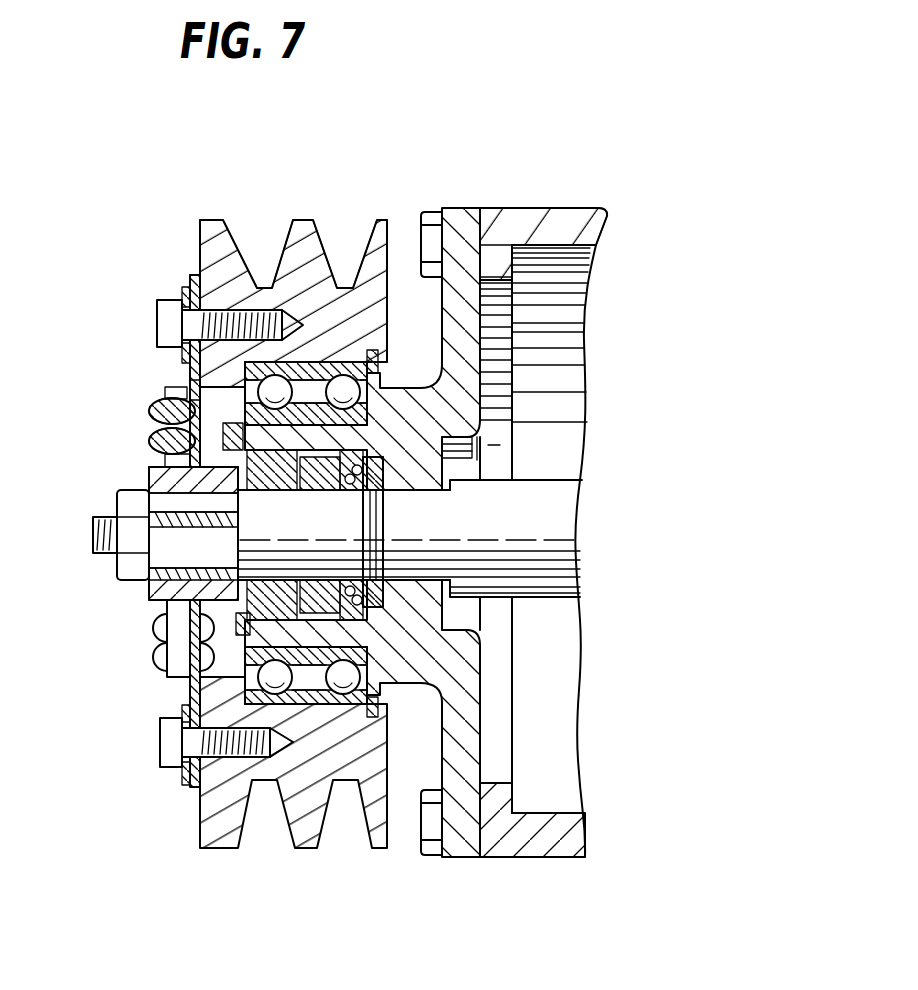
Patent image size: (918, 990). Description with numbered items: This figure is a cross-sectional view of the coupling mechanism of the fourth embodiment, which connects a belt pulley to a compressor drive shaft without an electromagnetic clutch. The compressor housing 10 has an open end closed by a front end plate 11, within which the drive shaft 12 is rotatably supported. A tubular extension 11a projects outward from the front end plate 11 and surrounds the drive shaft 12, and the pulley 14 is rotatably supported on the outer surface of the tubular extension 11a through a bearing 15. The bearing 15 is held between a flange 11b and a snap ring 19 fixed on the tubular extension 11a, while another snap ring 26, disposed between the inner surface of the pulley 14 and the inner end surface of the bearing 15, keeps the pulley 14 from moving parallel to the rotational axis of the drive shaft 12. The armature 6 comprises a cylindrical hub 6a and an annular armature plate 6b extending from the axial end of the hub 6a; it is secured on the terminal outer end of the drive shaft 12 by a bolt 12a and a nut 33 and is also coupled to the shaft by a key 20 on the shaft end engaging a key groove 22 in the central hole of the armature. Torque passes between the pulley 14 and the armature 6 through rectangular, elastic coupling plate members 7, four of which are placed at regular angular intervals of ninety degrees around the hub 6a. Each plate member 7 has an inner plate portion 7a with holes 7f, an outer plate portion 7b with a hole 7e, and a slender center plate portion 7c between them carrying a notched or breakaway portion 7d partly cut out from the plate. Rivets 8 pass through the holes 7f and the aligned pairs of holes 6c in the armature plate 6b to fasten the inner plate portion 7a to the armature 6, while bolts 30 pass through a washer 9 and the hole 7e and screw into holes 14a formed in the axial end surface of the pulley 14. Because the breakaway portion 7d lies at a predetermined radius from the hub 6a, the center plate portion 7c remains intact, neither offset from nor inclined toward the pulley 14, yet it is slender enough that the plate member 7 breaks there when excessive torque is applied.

The armature 6 is at (144, 602).
The hub 6a is at (160, 490).
The armature plate 6b is at (180, 635).
The holes 6c is at (155, 410).
The coupling plate member 7 is at (184, 264).
The inner plate portion 7a is at (150, 450).
The outer plate portion 7b is at (190, 274).
The center plate portion 7c is at (185, 380).
The notched or breakaway portion 7d is at (190, 690).
The hole 7e is at (188, 296).
The holes 7f is at (165, 430).
The rivets 8 is at (160, 668).
The washer 9 is at (183, 293).
The compressor housing 10 is at (544, 217).
The front end plate 11 is at (483, 206).
The tubular extension 11a is at (340, 442).
The flange 11b is at (400, 412).
The drive shaft 12 is at (550, 527).
The bolt 12a is at (100, 536).
The pulley 14 is at (384, 212).
The holes 14a is at (252, 313).
The bearing 15 is at (366, 390).
The snap ring 19 is at (190, 390).
The key 20 is at (212, 512).
The key groove 22 is at (528, 196).
The snap ring 26 is at (372, 361).
The bolts 30 is at (165, 320).
The nut 33 is at (127, 577).